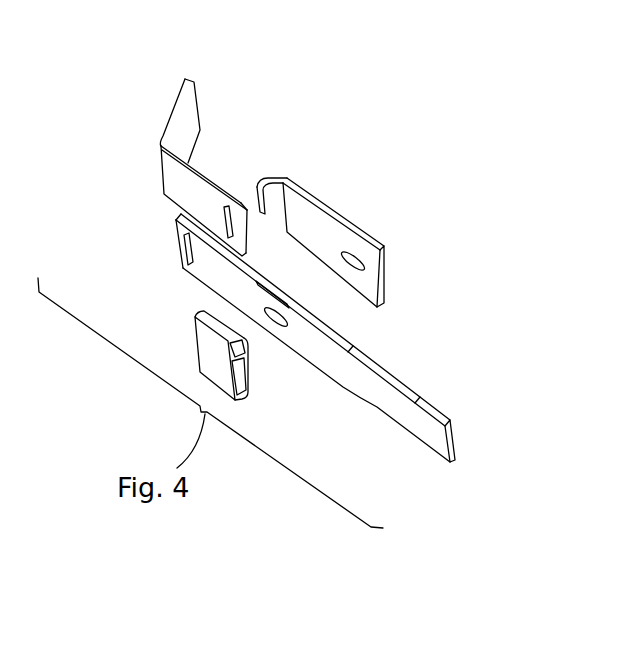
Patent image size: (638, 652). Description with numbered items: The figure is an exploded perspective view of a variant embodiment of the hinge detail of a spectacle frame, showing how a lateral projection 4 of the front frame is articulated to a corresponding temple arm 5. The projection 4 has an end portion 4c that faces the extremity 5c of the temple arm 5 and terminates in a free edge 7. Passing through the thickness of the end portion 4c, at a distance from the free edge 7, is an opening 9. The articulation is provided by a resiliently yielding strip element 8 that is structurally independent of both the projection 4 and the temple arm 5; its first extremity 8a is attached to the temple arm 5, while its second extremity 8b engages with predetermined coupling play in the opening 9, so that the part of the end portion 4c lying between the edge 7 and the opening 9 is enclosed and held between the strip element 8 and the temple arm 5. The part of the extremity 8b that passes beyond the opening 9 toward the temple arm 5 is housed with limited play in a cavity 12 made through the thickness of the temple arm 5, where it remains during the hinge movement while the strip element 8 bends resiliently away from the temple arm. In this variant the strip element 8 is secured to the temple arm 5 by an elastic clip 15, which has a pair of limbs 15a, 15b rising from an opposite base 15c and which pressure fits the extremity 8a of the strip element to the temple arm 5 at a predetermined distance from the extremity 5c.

The lateral projection 4 is at (188, 122).
The end portion of projection 4c is at (264, 246).
The temple arm 5 is at (387, 402).
The extremity of temple arm 5c is at (165, 229).
The free edge 7 is at (249, 212).
The resiliently yielding element 8 is at (323, 211).
The first extremity of resilient element 8a is at (398, 264).
The second extremity of resilient element 8b is at (264, 165).
The opening 9 is at (225, 220).
The cavity 12 is at (184, 253).
The elastic clip 15 is at (184, 341).
The limb of clip 15a is at (247, 345).
The limb of clip 15b is at (250, 378).
The base of clip 15c is at (217, 372).